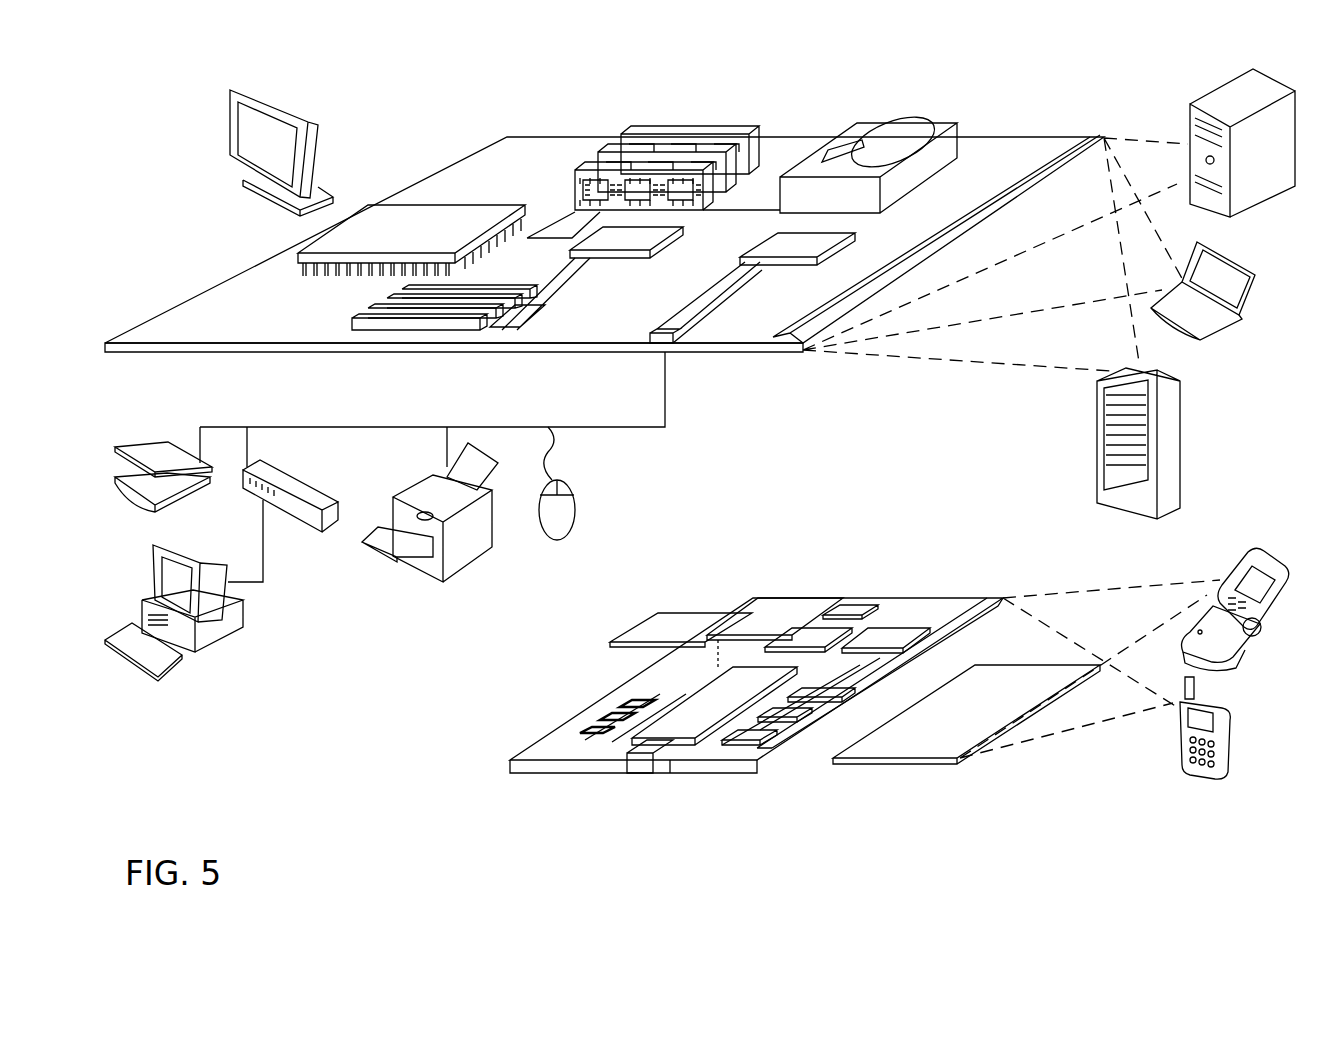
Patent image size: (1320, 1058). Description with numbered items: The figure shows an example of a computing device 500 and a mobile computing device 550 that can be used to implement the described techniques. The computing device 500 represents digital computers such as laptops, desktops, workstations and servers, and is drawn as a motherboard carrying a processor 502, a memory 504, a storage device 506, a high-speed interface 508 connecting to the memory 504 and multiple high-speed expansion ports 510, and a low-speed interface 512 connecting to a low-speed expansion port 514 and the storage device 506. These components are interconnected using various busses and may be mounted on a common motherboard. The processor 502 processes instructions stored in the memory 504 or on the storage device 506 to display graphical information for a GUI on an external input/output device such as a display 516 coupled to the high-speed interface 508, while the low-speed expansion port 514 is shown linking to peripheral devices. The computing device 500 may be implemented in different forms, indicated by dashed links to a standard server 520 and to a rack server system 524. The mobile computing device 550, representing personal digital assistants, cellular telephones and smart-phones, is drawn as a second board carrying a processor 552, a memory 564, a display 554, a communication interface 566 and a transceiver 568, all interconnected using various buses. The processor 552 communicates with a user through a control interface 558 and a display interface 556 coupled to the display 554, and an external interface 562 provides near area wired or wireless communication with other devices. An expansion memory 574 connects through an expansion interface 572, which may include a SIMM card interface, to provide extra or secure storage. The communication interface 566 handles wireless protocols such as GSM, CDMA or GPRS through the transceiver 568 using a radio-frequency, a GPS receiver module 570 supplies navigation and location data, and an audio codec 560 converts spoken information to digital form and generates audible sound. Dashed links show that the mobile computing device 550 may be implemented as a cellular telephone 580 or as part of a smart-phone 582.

The computing device 500 is at (426, 102).
The processor 502 is at (300, 258).
The memory 504 is at (621, 133).
The storage device 506 is at (862, 136).
The high-speed interface 508 is at (603, 237).
The high-speed expansion ports 510 is at (380, 318).
The low-speed interface 512 is at (777, 245).
The low-speed expansion port 514 is at (670, 343).
The display 516 is at (232, 92).
The standard server 520 is at (1180, 125).
The rack server system 524 is at (1096, 468).
The mobile computing device 550 is at (478, 776).
The processor 552 is at (688, 728).
The display 554 is at (927, 747).
The display interface 556 is at (757, 740).
The control interface 558 is at (792, 713).
The audio codec 560 is at (817, 693).
The external interface 562 is at (652, 763).
The memory 564 is at (600, 735).
The communication interface 566 is at (808, 635).
The transceiver 568 is at (885, 628).
The GPS receiver module 570 is at (858, 605).
The expansion interface 572 is at (735, 612).
The expansion memory 574 is at (660, 614).
The cellular telephone 580 is at (1232, 575).
The smart-phone 582 is at (1176, 732).